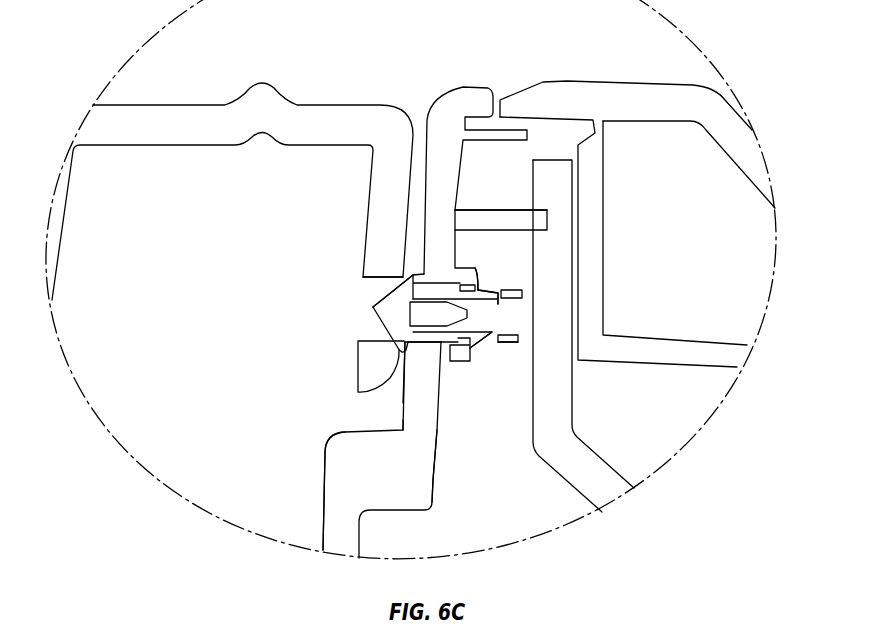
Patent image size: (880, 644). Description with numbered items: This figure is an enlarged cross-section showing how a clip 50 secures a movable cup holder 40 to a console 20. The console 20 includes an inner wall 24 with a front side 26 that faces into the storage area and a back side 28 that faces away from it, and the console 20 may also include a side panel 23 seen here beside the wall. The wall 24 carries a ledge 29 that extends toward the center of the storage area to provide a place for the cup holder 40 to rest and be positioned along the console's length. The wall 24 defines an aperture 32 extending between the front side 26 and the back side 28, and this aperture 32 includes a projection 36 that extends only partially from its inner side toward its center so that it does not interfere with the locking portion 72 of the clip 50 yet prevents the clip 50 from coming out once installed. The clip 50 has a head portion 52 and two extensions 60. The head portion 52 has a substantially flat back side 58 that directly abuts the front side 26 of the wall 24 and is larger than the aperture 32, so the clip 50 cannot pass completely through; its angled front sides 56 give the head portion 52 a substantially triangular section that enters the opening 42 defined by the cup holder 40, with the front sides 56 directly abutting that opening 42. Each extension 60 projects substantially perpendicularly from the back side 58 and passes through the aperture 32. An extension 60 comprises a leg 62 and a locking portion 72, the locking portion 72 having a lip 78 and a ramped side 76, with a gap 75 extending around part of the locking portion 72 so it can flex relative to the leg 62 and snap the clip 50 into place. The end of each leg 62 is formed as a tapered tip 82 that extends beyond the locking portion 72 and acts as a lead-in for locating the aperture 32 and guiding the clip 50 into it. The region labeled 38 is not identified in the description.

The console 20 is at (462, 76).
The side panel 23 is at (620, 467).
The wall 24 is at (402, 403).
The front side 26 is at (401, 420).
The back side 28 is at (433, 480).
The ledge 29 is at (338, 440).
The aperture 32 is at (424, 358).
The projection 36 is at (467, 314).
The recess 38 is at (440, 286).
The cup holder 40 is at (164, 98).
The opening 42 is at (362, 286).
The clip 50 is at (362, 323).
The head portion 52 is at (361, 296).
The front side 56 is at (392, 345).
The back side 58 is at (408, 348).
The extension 60 is at (450, 358).
The leg 62 is at (447, 363).
The locking portion 72 is at (484, 348).
The gap 75 is at (500, 348).
The ramped side 76 is at (494, 281).
The lip 78 is at (476, 268).
The tip 82 is at (514, 343).